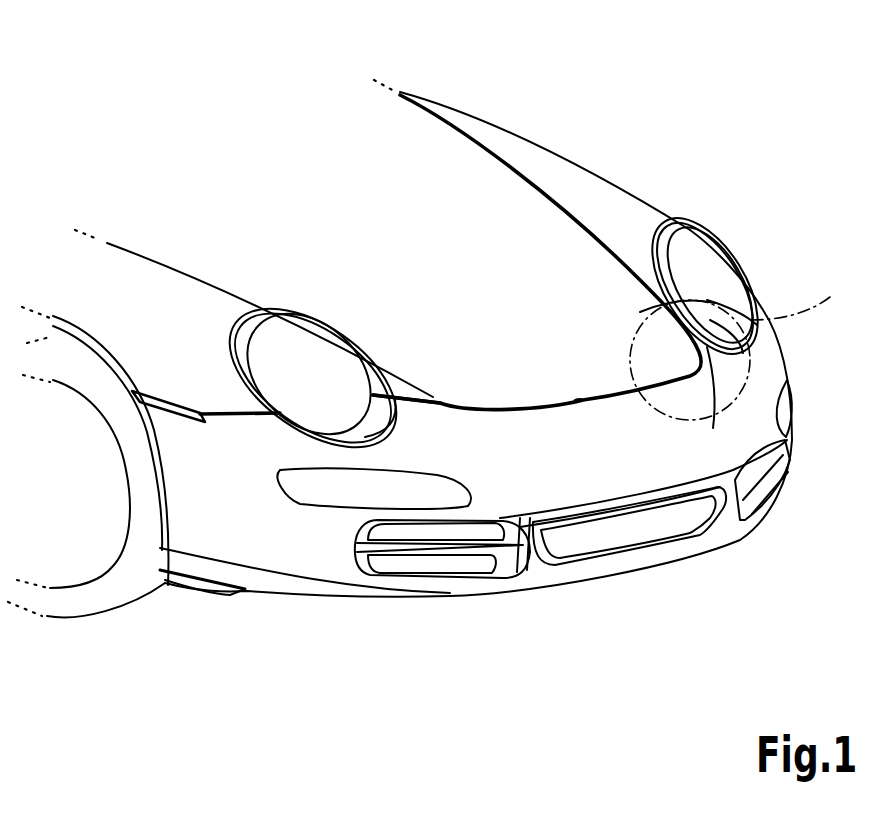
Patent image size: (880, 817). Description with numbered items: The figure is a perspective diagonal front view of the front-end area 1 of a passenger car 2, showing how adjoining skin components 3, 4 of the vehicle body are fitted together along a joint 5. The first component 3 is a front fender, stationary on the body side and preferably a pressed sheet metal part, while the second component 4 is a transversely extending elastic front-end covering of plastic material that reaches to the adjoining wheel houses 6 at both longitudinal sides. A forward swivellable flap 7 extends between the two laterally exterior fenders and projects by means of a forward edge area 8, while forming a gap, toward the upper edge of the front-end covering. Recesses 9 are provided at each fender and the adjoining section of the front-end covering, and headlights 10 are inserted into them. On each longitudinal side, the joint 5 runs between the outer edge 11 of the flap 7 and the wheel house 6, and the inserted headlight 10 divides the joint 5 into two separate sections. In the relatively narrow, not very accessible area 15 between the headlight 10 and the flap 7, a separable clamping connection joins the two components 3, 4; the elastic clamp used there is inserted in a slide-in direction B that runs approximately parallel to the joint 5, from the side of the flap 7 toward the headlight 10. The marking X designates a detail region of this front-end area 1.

The front-end area 1 is at (799, 366).
The passenger car 2 is at (460, 96).
The first component 3 is at (117, 273).
The second component 4 is at (610, 467).
The joint 5 is at (418, 404).
The wheel house 6 is at (157, 491).
The flap 7 is at (440, 253).
The forward edge area 8 is at (575, 396).
The recess 9 is at (240, 357).
The headlight 10 is at (293, 345).
The outer edge 11 is at (408, 376).
The area 15 is at (715, 412).
The slide-in direction B is at (451, 396).
The detail X is at (800, 284).